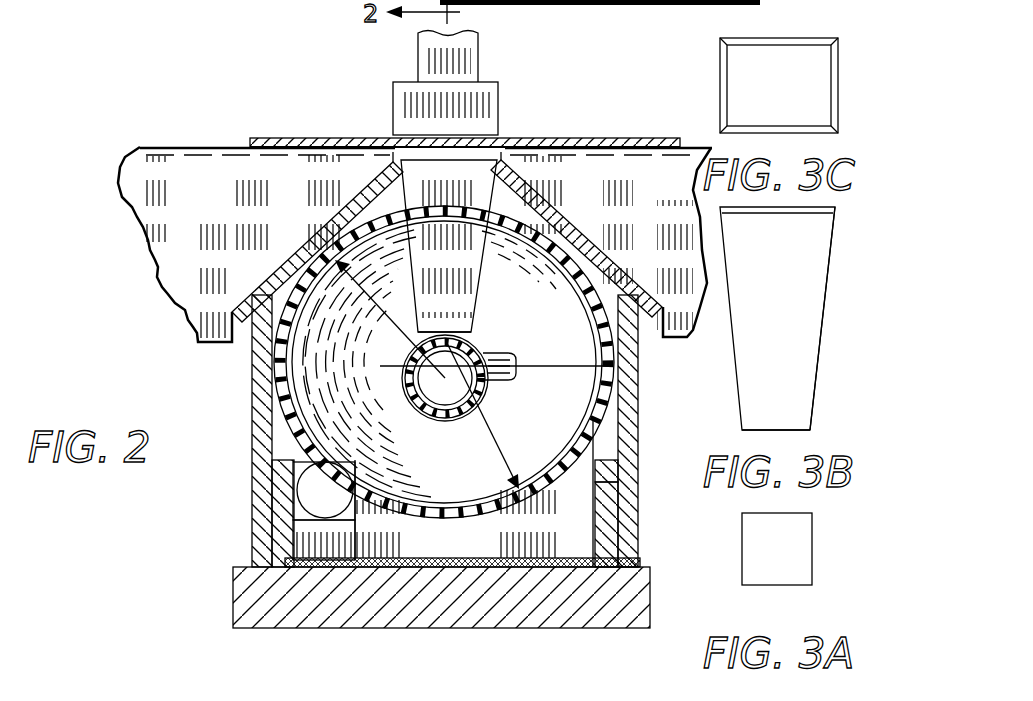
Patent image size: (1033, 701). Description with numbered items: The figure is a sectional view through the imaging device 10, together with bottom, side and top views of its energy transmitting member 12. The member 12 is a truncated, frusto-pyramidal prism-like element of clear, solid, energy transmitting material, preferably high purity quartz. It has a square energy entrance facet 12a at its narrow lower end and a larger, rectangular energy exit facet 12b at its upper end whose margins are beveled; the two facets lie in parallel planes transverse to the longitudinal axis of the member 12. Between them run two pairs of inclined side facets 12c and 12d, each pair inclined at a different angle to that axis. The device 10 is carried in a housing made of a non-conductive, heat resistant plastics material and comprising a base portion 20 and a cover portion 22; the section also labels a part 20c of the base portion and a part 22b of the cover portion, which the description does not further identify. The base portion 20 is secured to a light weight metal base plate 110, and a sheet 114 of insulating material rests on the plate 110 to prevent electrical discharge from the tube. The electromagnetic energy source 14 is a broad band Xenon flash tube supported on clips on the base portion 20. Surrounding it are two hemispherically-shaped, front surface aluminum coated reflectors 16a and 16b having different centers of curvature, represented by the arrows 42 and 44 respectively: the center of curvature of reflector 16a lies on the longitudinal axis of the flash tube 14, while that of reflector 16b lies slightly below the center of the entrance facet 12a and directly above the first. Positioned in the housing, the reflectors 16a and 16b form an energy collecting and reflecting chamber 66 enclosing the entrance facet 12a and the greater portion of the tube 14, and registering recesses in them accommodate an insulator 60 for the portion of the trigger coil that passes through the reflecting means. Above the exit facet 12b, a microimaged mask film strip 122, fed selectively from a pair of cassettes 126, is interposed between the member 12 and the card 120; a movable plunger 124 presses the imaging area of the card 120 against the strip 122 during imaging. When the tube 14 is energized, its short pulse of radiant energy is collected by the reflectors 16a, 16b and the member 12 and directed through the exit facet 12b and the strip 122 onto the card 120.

In FIG. 2, the imaging device 10 is at (648, 412).
In FIG. 2, the energy transmitting member 12 is at (482, 262).
In FIG. 3B, the energy transmitting member 12 is at (825, 307).
In FIG. 3B, the energy entrance facet 12a is at (800, 431).
In FIG. 3A, the energy entrance facet 12a is at (806, 556).
In FIG. 3C, the energy exit facet 12b is at (800, 56).
In FIG. 3B, the energy exit facet 12b is at (832, 208).
In FIG. 3B, the inclined side facets 12c is at (822, 272).
In FIG. 2, the inclined side facets 12d is at (466, 302).
In FIG. 2, the electromagnetic energy source 14 is at (478, 392).
In FIG. 2, the reflector 16a is at (312, 300).
In FIG. 2, the reflector 16b is at (425, 507).
In FIG. 2, the base portion 20 is at (248, 546).
In FIG. 2, the bearing block portion 20c is at (632, 549).
In FIG. 2, the cover portion 22 is at (248, 384).
In FIG. 2, the housing portion 22b is at (620, 513).
In FIG. 2, the arrow 42 is at (390, 319).
In FIG. 2, the arrow 44 is at (500, 426).
In FIG. 2, the insulator 60 is at (512, 354).
In FIG. 2, the energy collecting and reflecting chamber 66 is at (452, 456).
In FIG. 2, the base plate 110 is at (396, 622).
In FIG. 2, the sheet of insulating material 114 is at (597, 0).
In FIG. 2, the card 120 is at (283, 138).
In FIG. 2, the microimaged mask film strip 122 is at (508, 146).
In FIG. 2, the movable plunger 124 is at (498, 98).
In FIG. 2, the cassettes 126 is at (152, 250).